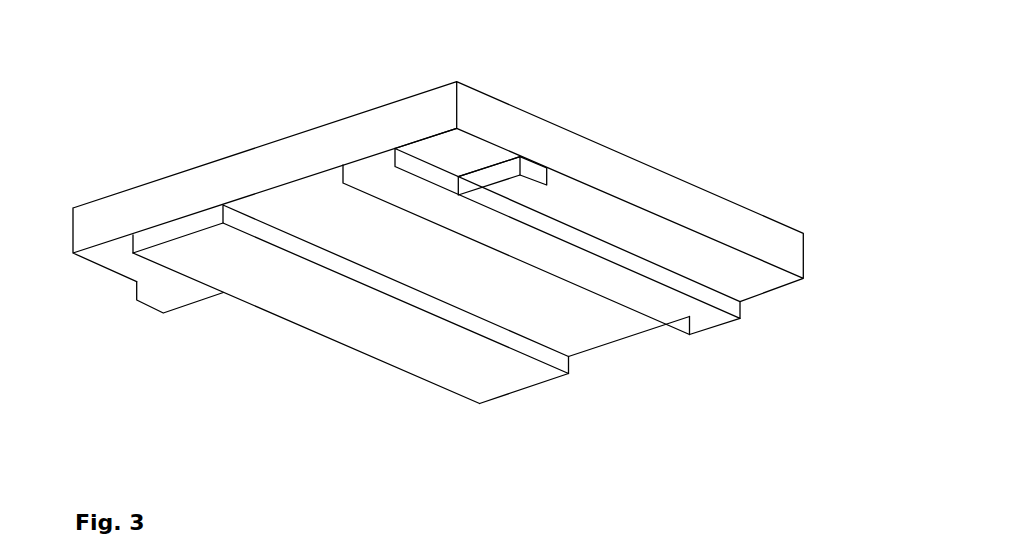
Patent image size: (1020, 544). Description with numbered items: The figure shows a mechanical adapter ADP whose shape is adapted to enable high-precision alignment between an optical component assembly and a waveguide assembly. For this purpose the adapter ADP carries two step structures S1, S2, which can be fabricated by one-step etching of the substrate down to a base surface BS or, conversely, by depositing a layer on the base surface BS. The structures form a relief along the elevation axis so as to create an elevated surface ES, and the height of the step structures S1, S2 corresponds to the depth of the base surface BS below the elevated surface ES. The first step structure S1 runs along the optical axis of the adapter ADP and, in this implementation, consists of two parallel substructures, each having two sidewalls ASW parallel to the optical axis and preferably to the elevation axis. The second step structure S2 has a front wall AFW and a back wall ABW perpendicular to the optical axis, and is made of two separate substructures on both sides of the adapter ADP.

The mechanical adapter ADP is at (520, 117).
The front wall AFW is at (480, 170).
The back wall ABW is at (538, 196).
The sidewalls ASW is at (270, 235).
The first step structure S1 is at (358, 331).
The second step structure S2 is at (183, 297).
The base surface BS is at (590, 337).
The elevated surface ES is at (537, 386).